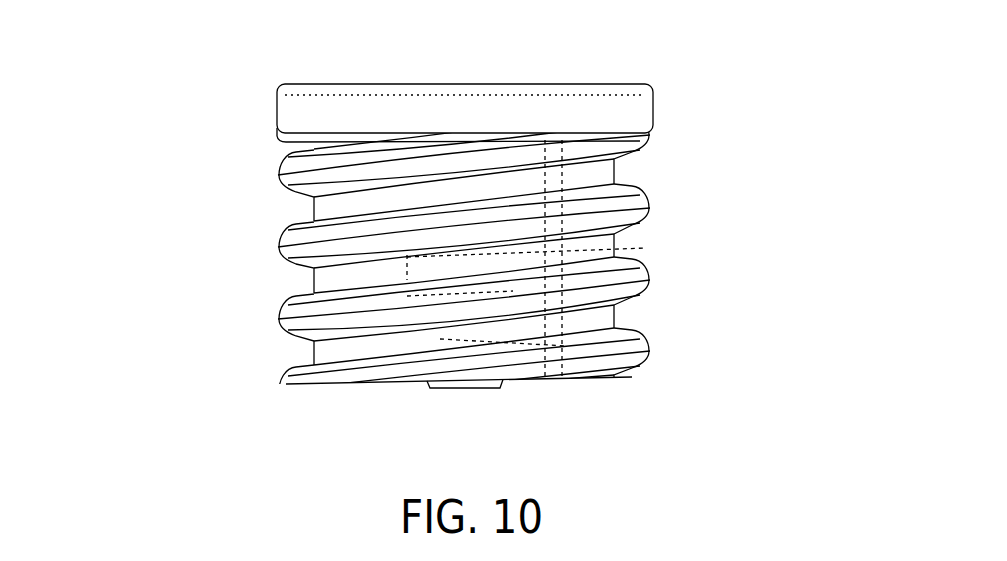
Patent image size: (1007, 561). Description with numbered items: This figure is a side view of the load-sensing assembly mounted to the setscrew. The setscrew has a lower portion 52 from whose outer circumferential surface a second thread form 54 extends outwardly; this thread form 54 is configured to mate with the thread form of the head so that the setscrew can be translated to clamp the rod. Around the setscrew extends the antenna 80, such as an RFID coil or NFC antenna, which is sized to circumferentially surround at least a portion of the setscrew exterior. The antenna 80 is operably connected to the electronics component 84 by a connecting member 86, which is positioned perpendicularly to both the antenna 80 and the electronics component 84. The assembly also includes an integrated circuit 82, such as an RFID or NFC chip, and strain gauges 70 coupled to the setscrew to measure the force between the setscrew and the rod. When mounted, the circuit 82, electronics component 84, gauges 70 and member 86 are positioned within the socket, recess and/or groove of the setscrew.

The lower portion 52 is at (190, 180).
The second thread form 54 is at (286, 318).
The strain gauges 70 is at (653, 353).
The antenna 80 is at (633, 108).
The integrated circuit 82 is at (645, 248).
The electronics component 84 is at (653, 292).
The connecting member 86 is at (653, 193).